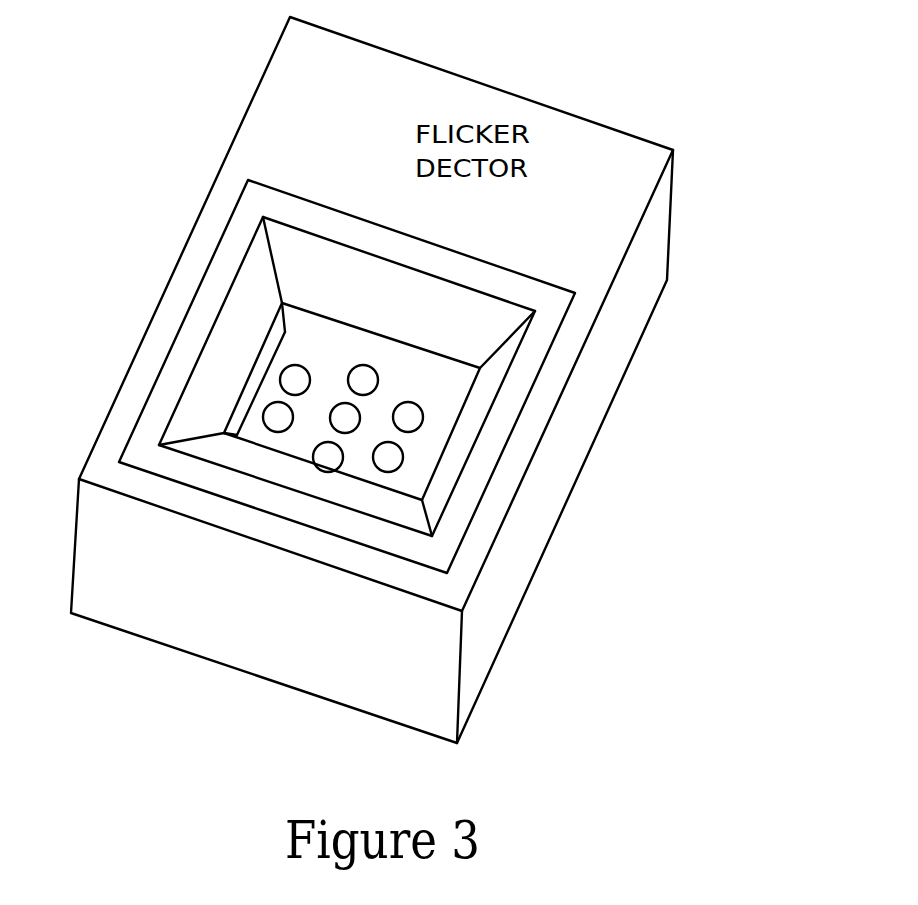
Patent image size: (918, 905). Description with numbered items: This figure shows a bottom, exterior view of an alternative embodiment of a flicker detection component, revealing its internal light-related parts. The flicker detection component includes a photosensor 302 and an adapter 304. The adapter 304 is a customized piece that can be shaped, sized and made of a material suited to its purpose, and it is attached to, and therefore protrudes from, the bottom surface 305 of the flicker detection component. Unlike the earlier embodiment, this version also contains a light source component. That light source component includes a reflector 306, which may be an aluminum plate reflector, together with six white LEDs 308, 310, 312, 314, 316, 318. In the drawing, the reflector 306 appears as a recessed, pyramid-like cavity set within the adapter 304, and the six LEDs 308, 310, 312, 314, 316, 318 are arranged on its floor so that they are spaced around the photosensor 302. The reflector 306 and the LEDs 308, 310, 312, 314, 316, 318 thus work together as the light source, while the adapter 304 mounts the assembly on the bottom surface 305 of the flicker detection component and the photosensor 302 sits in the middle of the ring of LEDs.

The photosensor 302 is at (345, 418).
The adapter 304 is at (467, 313).
The bottom surface 305 is at (638, 157).
The reflector 306 is at (285, 333).
The LED 308 is at (408, 417).
The LED 310 is at (388, 458).
The LED 312 is at (363, 380).
The LED 314 is at (295, 380).
The LED 316 is at (278, 417).
The LED 318 is at (328, 457).